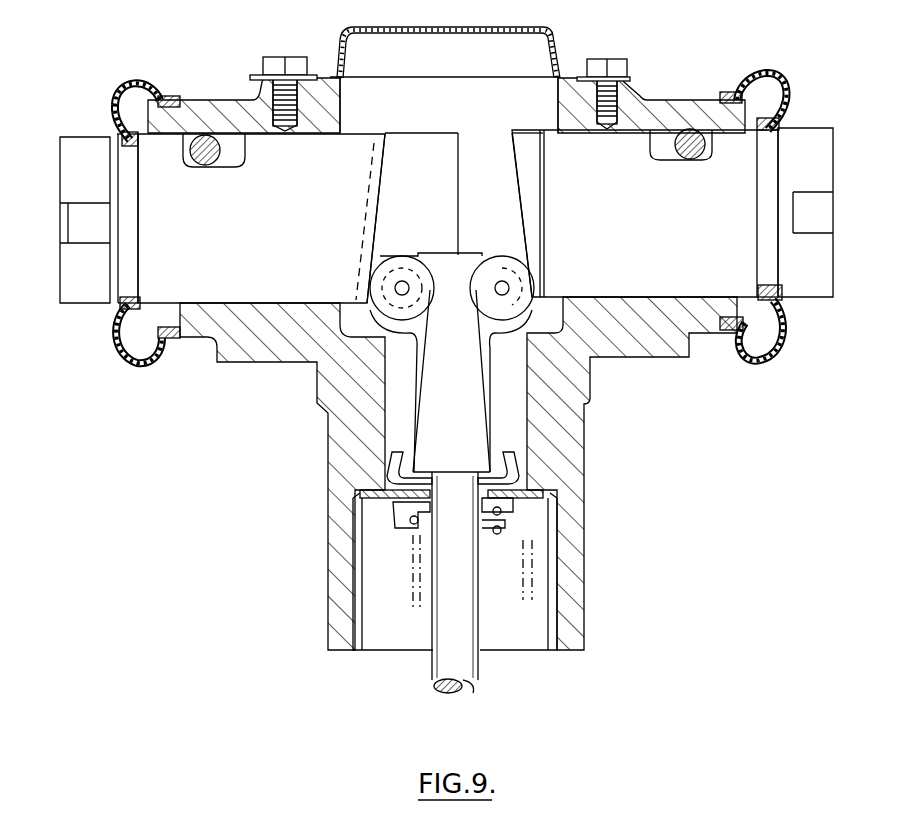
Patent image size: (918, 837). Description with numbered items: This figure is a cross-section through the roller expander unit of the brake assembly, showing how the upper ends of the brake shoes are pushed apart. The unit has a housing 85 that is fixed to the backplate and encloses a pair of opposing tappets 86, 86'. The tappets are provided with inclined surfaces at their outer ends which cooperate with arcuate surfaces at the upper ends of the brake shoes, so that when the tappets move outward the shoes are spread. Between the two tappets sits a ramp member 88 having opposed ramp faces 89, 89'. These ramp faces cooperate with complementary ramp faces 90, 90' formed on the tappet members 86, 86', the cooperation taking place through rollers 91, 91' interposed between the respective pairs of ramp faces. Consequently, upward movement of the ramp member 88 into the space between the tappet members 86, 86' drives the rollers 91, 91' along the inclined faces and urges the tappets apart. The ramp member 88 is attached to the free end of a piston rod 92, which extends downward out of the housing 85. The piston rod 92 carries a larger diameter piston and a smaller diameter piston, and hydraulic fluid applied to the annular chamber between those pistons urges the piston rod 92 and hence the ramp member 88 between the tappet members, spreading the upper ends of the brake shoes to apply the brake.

The housing 85 is at (650, 118).
The tappet 86 is at (261, 269).
The tappet 86' is at (634, 267).
The ramp member 88 is at (447, 422).
The ramp face 89 is at (353, 391).
The ramp face 89' is at (563, 391).
The ramp face 90 is at (389, 218).
The ramp face 90' is at (516, 194).
The roller 91 is at (407, 256).
The roller 91' is at (502, 256).
The piston rod 92 is at (464, 688).